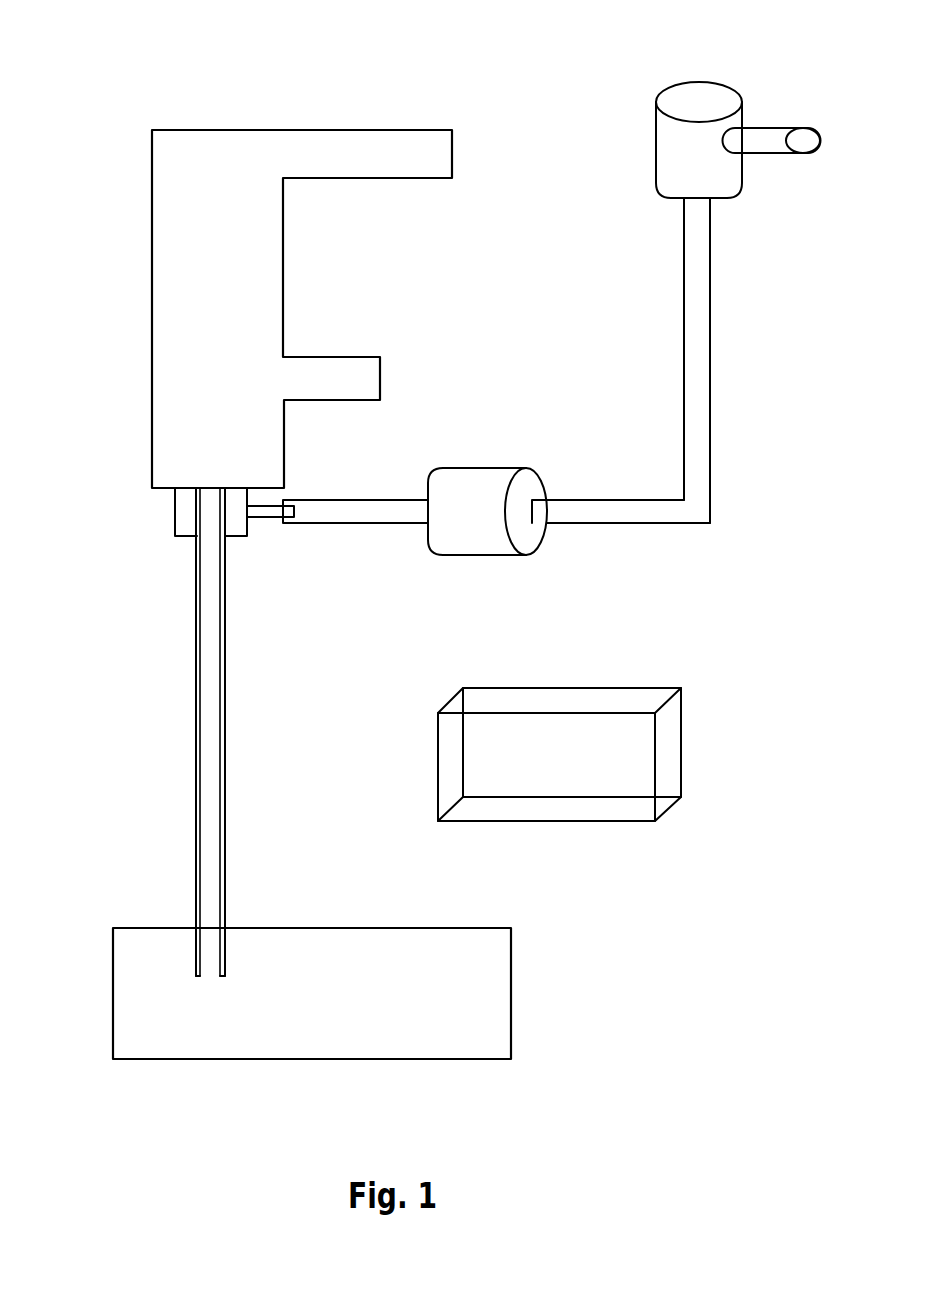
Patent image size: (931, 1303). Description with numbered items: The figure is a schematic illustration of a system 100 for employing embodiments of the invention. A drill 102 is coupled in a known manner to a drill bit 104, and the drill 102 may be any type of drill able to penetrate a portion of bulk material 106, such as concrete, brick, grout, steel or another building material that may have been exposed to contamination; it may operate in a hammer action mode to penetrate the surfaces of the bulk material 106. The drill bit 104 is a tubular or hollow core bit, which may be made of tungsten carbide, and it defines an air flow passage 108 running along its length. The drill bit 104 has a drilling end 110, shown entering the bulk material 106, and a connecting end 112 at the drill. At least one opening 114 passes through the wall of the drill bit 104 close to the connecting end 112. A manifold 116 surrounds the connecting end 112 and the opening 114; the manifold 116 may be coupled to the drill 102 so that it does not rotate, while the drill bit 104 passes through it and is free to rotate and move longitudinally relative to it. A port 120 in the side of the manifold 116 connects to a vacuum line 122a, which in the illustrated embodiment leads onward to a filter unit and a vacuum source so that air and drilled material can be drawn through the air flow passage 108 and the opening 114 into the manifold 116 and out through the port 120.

The system 100 is at (539, 24).
The drill 102 is at (259, 275).
The drill bit 104 is at (223, 703).
The bulk material 106 is at (402, 940).
The air flow passage 108 is at (210, 810).
The drilling end 110 is at (245, 952).
The connecting end 112 is at (187, 501).
The opening 114 is at (235, 512).
The manifold 116 is at (197, 583).
The port 120 is at (258, 510).
The vacuum line 122a is at (368, 498).